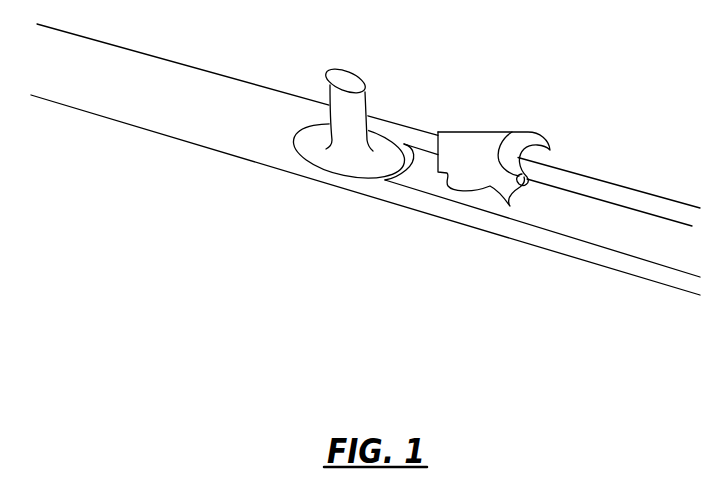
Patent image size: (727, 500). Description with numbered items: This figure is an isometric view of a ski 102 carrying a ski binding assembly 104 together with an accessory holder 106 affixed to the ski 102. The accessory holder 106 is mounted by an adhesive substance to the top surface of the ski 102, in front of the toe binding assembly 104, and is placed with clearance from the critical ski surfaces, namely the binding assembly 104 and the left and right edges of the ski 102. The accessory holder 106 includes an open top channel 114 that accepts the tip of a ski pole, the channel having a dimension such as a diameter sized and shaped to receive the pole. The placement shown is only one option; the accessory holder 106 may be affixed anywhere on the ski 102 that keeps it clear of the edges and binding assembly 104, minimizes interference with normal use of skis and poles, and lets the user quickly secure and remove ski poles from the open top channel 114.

The ski 102 is at (365, 159).
The ski binding assembly 104 is at (478, 134).
The accessory holder 106 is at (310, 147).
The open top channel 114 is at (345, 76).